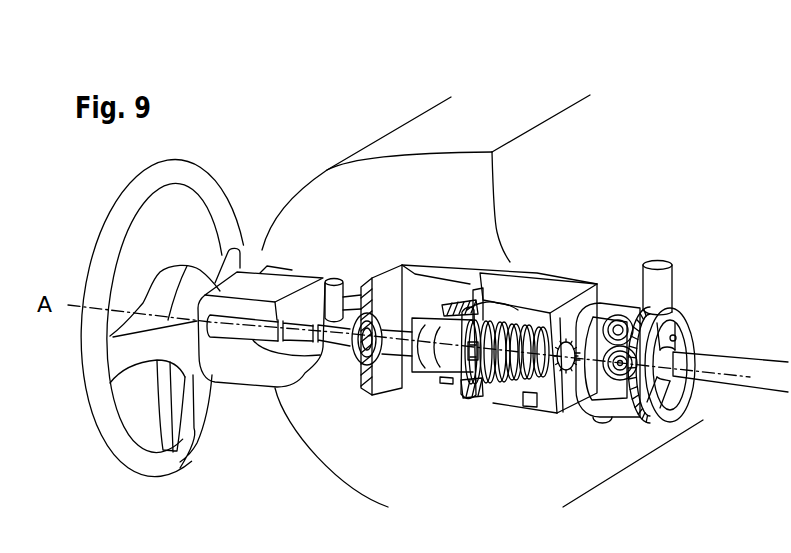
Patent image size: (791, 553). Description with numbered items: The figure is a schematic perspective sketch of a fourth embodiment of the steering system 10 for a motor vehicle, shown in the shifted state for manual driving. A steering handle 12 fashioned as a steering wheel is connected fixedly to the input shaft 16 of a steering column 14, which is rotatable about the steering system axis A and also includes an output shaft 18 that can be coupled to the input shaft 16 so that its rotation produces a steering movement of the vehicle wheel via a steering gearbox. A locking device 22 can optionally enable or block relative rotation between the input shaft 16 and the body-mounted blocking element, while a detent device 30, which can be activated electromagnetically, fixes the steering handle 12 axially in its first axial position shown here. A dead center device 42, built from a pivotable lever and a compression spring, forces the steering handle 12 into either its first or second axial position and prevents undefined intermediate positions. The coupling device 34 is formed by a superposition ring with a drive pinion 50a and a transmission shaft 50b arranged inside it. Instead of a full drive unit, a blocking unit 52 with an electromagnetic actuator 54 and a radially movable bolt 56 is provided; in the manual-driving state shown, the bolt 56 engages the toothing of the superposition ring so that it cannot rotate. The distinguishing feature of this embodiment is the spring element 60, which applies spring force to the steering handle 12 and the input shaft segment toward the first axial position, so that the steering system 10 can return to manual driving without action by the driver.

The steering system 10 is at (635, 128).
The steering handle 12 is at (206, 180).
The steering column 14 is at (451, 413).
The input shaft 16 is at (382, 347).
The output shaft 18 is at (713, 381).
The locking device 22 is at (557, 282).
The detent device 30 is at (282, 362).
The coupling device 34 is at (638, 440).
The dead center device 42 is at (507, 290).
The drive pinion 50a is at (608, 376).
The transmission shaft 50b is at (622, 333).
The blocking unit 52 is at (645, 340).
The electromagnetic actuator 54 is at (663, 285).
The bolt 56 is at (663, 315).
The spring element 60 is at (514, 358).